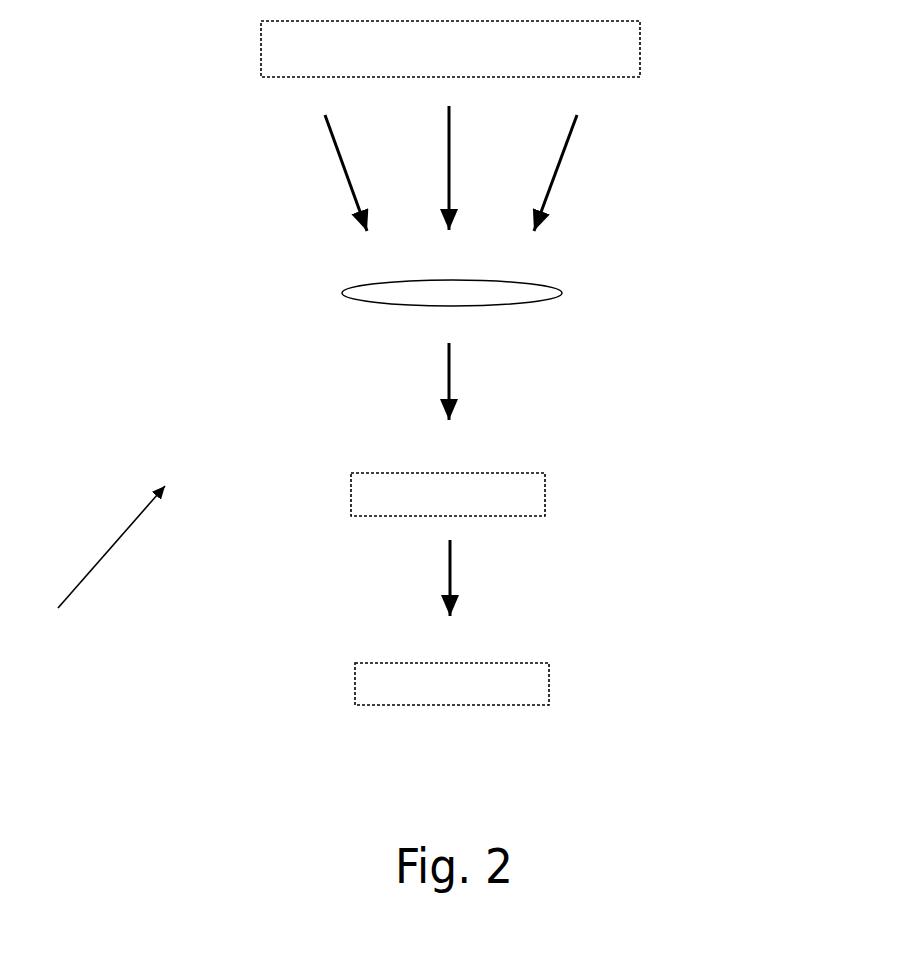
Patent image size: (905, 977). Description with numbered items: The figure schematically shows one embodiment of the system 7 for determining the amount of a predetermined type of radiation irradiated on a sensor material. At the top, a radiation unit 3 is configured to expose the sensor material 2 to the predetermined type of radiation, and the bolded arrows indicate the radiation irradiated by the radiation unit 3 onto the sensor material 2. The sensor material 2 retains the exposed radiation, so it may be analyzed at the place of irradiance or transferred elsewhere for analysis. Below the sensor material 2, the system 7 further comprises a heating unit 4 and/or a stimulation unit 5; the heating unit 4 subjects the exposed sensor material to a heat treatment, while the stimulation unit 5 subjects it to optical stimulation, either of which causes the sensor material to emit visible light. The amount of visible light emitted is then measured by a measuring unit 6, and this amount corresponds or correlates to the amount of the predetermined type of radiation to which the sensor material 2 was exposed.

The radiation unit 3 is at (599, 53).
The sensor material 2 is at (517, 293).
The heating unit 4 is at (537, 557).
The stimulation unit 5 is at (527, 507).
The measuring unit 6 is at (514, 689).
The system 7 is at (97, 564).